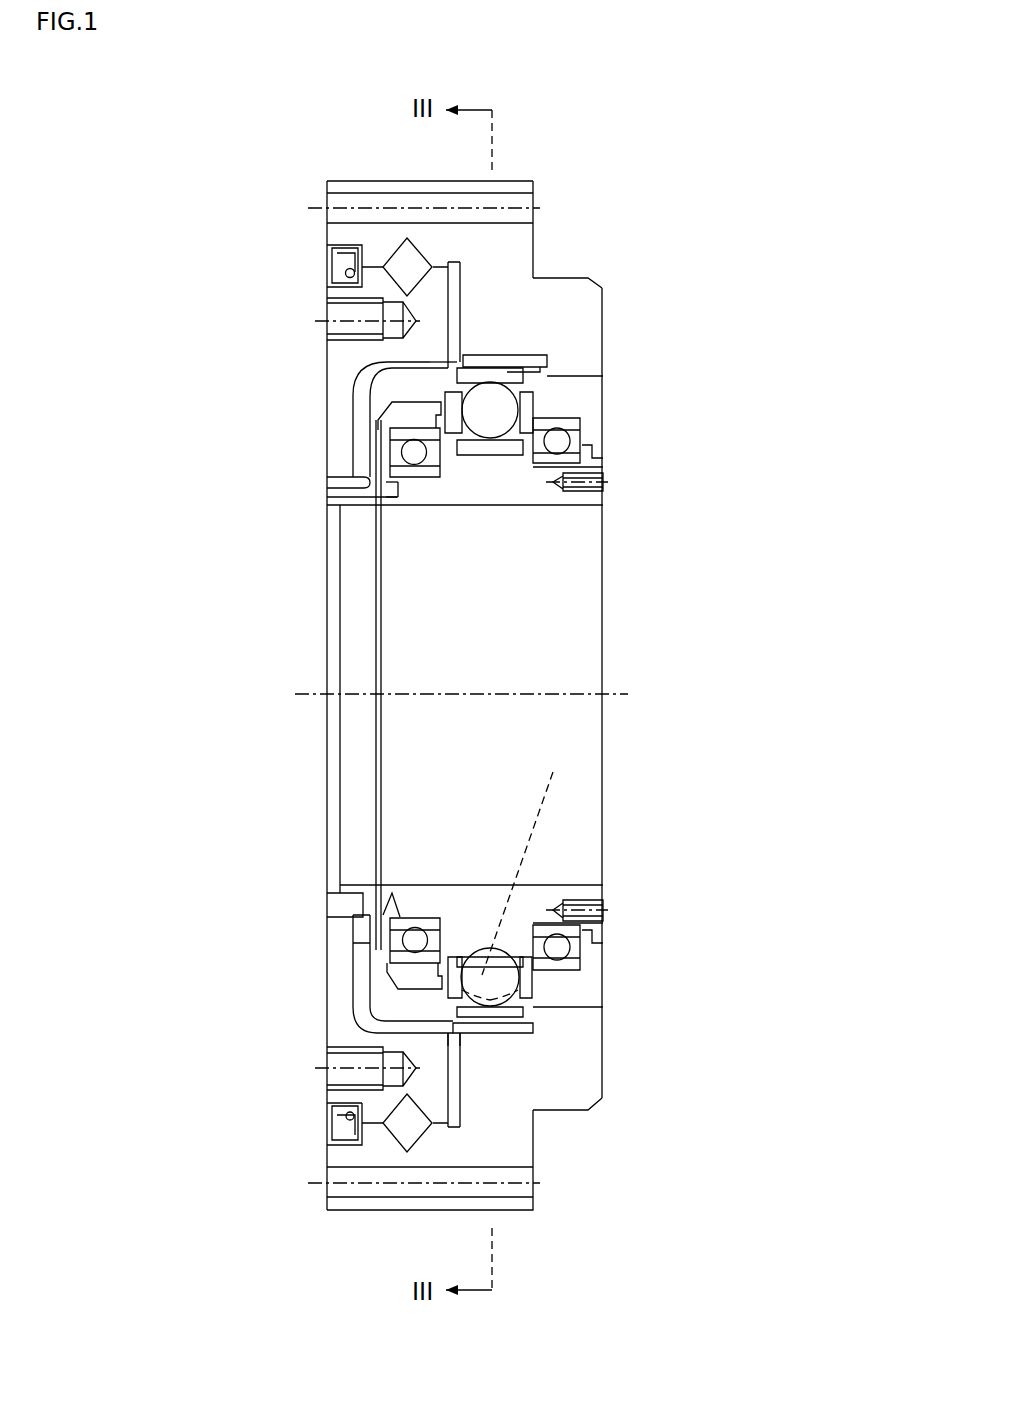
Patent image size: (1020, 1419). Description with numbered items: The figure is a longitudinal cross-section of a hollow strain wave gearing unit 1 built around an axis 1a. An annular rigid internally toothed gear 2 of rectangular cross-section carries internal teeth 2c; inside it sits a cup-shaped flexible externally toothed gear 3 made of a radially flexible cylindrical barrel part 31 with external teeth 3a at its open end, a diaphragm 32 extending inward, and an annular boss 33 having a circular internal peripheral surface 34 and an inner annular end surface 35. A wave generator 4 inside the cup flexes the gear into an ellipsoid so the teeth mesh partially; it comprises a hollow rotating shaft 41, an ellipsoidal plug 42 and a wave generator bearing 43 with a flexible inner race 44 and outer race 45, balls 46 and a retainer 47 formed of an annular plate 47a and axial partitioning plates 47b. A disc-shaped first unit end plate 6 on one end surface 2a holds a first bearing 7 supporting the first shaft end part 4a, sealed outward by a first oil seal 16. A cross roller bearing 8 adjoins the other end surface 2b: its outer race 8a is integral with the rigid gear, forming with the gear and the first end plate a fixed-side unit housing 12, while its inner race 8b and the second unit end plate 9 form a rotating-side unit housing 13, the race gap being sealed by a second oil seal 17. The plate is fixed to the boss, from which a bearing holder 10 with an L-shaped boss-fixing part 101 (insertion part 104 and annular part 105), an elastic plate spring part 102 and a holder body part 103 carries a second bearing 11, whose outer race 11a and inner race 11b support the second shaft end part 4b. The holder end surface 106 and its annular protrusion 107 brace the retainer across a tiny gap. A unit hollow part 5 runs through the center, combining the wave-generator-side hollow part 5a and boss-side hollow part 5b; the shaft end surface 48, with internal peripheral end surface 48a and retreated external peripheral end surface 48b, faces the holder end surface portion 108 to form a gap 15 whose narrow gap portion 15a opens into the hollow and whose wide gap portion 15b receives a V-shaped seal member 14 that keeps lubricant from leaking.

The hollow strain wave gearing unit 1 is at (658, 215).
The axis 1a is at (615, 694).
The rigid internally toothed gear 2 is at (495, 338).
The one end surface 2a is at (535, 238).
The other end surface 2b is at (448, 293).
The internal teeth 2c is at (543, 365).
The flexible externally toothed gear 3 is at (443, 347).
The external teeth 3a is at (499, 344).
The wave generator 4 is at (540, 382).
The first shaft end part 4a is at (573, 499).
The second shaft end part 4b is at (403, 492).
The unit hollow part 5 is at (503, 678).
The wave-generator-side hollow part 5a is at (563, 628).
The boss-side hollow part 5b is at (352, 663).
The first unit end plate 6 is at (584, 392).
The first bearing 7 is at (594, 425).
The cross roller bearing 8 is at (298, 122).
The outer race 8a is at (392, 238).
The inner race 8b is at (385, 292).
The second unit end plate 9 is at (333, 401).
The bearing holder 10 is at (368, 413).
The second bearing 11 is at (385, 450).
The outer race 11a is at (432, 436).
The inner race 11b is at (413, 495).
The fixed-side unit housing 12 is at (663, 1217).
The rotating-side unit housing 13 is at (225, 1065).
The seal member 14 is at (391, 878).
The gap 15 is at (483, 610).
The gap portion 15a is at (386, 497).
The gap portion 15b is at (410, 492).
The first oil seal 16 is at (607, 463).
The second oil seal 17 is at (323, 259).
The cylindrical barrel part 31 is at (450, 357).
The diaphragm 32 is at (358, 383).
The boss 33 is at (335, 492).
The circular internal peripheral surface 34 is at (332, 508).
The annular end surface 35 is at (378, 470).
The hollow rotating shaft 41 is at (527, 900).
The plug 42 is at (518, 930).
The wave generator bearing 43 is at (534, 978).
The inner race 44 is at (551, 902).
The outer race 45 is at (518, 1016).
The balls 46 is at (502, 968).
The retainer 47 is at (583, 747).
The annular plate 47a is at (477, 958).
The partitioning plates 47b is at (531, 861).
The shaft end surface 48 is at (233, 555).
The internal peripheral end surface 48a is at (388, 490).
The external peripheral end surface 48b is at (382, 488).
The boss-fixing part 101 is at (233, 860).
The plate spring part 102 is at (395, 933).
The holder body part 103 is at (392, 974).
The insertion part 104 is at (360, 888).
The annular part 105 is at (390, 900).
The holder end surface 106 is at (445, 975).
The annular protrusion 107 is at (466, 955).
The end surface portion 108 is at (383, 937).